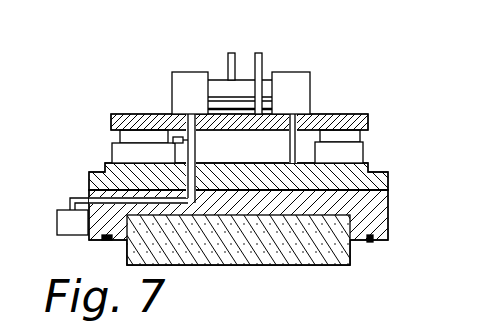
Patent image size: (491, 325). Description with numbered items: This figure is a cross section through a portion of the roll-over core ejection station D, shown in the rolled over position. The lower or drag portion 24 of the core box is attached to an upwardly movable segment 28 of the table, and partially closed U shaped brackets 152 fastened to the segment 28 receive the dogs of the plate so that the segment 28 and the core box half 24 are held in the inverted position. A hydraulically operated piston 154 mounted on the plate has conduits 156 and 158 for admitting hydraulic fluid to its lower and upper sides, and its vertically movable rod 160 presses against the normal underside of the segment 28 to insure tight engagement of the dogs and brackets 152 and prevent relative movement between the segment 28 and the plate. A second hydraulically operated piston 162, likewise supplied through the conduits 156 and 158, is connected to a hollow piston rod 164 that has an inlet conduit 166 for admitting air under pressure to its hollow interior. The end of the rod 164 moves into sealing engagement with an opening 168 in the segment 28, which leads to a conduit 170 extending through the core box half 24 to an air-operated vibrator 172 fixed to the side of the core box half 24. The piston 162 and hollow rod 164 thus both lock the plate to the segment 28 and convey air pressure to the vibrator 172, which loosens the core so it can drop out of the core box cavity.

The drag portion 24 is at (372, 213).
The upwardly movable segment 28 is at (378, 181).
The U shaped brackets 152 is at (115, 140).
The hydraulically operated piston 154 is at (298, 85).
The conduit 156 is at (227, 105).
The conduit 158 is at (242, 80).
The rod 160 is at (299, 133).
The second hydraulically operated piston 162 is at (190, 87).
The hollow piston rod 164 is at (197, 160).
The inlet conduit 166 is at (180, 137).
The opening 168 is at (289, 150).
The conduit 170 is at (112, 160).
The air-operated vibrator 172 is at (66, 221).
The station D is at (369, 112).